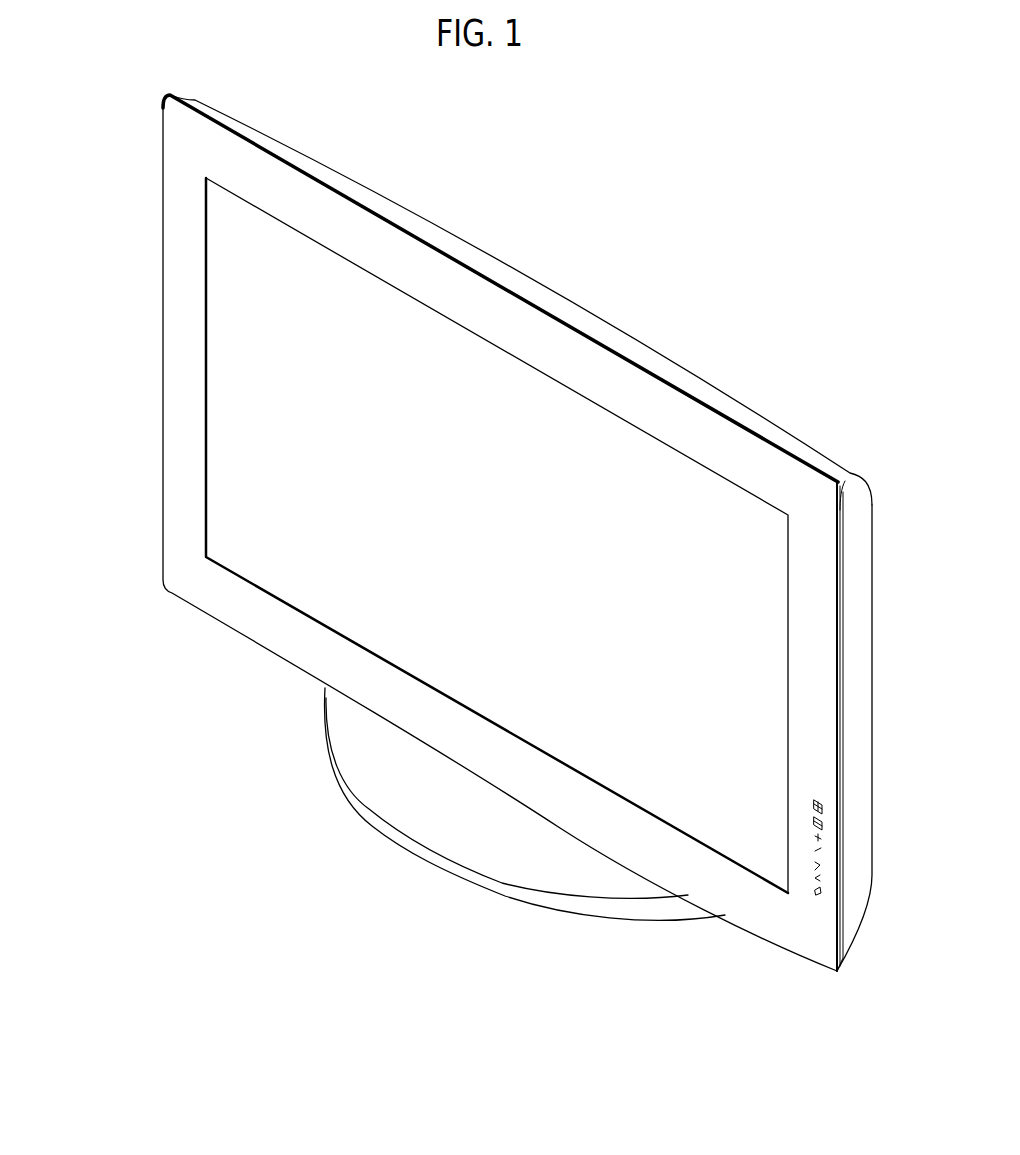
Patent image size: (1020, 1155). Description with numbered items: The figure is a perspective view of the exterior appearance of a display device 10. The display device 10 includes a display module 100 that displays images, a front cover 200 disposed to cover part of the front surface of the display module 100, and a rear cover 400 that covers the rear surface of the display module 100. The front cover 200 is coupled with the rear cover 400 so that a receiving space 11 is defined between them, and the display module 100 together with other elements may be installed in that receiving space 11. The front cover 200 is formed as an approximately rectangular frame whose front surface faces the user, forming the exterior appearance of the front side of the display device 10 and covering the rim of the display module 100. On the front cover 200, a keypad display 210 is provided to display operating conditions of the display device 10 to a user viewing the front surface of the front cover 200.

The display device 10 is at (164, 672).
The front cover 200 is at (150, 401).
The display module 100 is at (352, 606).
The rear cover 400 is at (693, 378).
The receiving space 11 is at (838, 710).
The keypad display 210 is at (806, 887).